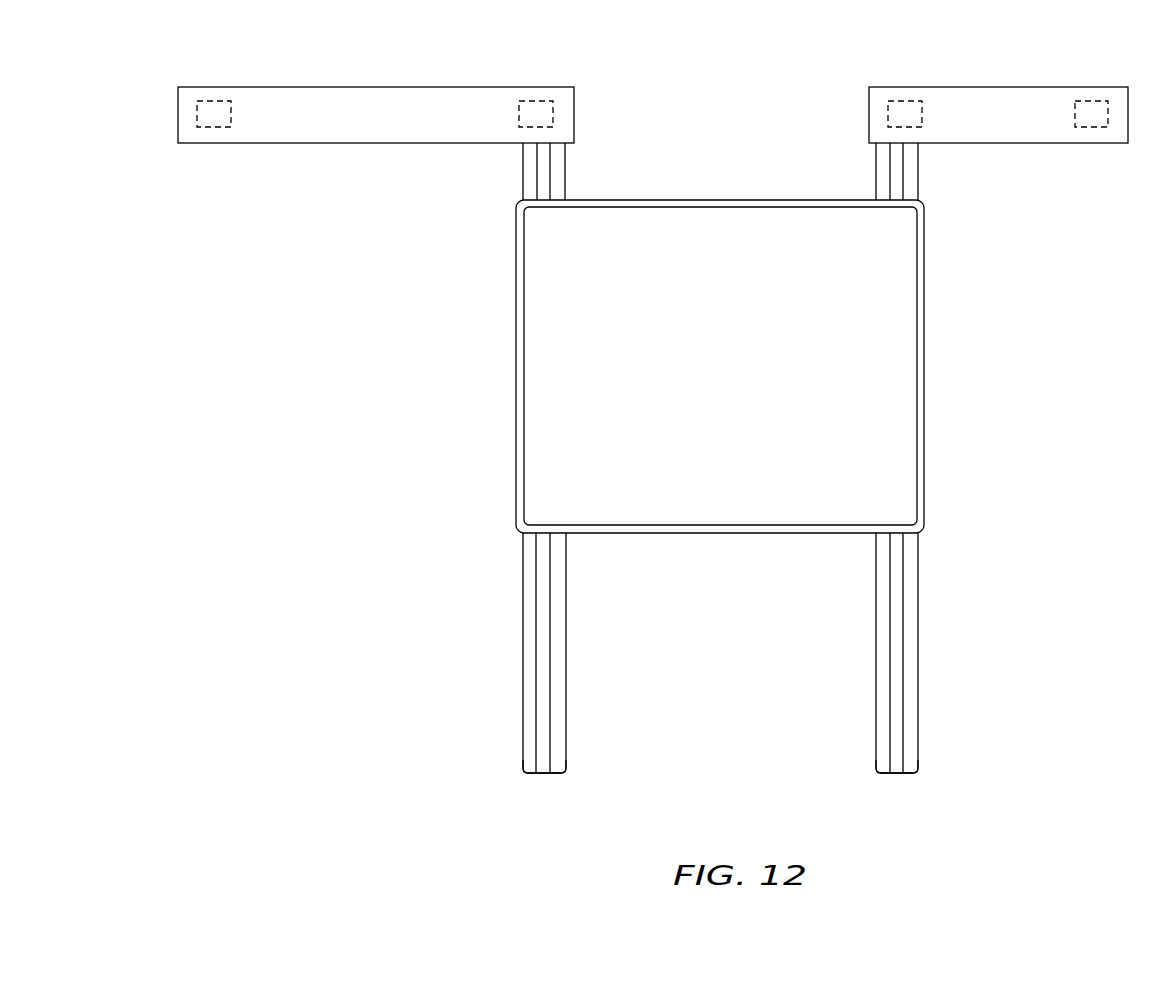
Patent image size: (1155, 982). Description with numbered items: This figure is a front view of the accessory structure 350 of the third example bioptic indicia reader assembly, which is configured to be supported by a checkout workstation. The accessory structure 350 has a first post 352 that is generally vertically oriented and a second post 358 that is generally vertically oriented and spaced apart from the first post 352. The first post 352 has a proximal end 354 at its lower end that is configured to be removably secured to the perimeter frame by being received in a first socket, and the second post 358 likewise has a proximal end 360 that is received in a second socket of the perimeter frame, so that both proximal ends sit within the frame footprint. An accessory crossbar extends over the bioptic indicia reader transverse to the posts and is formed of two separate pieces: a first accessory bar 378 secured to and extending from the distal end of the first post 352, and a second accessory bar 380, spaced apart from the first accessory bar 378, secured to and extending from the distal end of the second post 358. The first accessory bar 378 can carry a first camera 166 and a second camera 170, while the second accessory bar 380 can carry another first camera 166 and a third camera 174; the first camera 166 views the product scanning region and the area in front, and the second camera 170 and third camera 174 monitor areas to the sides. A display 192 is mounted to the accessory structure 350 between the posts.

The first camera 166 is at (517, 116).
The second camera 170 is at (232, 113).
The third camera 174 is at (1073, 113).
The display 192 is at (924, 367).
The accessory structure 350 is at (458, 384).
The first post 352 is at (547, 625).
The proximal end 354 is at (504, 768).
The second post 358 is at (895, 628).
The proximal end 360 is at (937, 767).
The first accessory bar 378 is at (375, 144).
The second accessory bar 380 is at (998, 144).